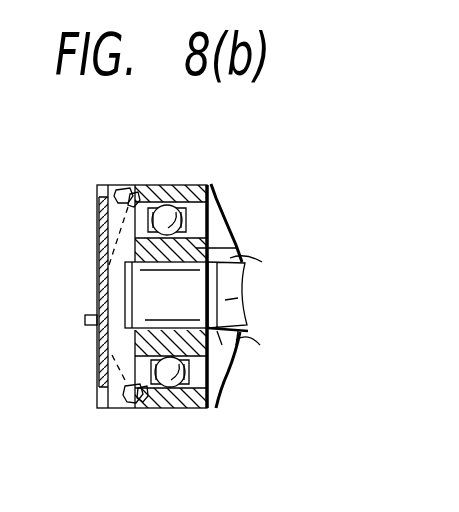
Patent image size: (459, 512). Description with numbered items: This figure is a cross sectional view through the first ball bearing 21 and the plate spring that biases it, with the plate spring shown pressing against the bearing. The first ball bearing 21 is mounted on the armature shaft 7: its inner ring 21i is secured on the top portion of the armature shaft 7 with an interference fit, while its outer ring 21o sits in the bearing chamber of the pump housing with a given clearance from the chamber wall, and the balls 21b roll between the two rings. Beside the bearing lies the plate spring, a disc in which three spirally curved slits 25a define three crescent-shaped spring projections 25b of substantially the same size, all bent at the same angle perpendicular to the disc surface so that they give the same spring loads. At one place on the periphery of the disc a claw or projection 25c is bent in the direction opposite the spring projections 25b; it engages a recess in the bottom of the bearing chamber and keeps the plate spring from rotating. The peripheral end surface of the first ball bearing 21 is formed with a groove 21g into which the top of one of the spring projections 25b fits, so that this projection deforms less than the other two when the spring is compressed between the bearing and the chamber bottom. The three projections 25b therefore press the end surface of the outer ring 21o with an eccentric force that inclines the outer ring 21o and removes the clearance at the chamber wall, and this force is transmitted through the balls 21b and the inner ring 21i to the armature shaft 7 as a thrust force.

The first ball bearing 21 is at (185, 184).
The outer ring 21o is at (208, 186).
The balls 21b is at (210, 200).
The inner ring 21i is at (214, 240).
The groove 21g is at (147, 403).
The armature shaft 7 is at (196, 300).
The slits 25a is at (124, 188).
The crescent-shaped spring projections 25b is at (134, 196).
The projection 25c is at (86, 318).